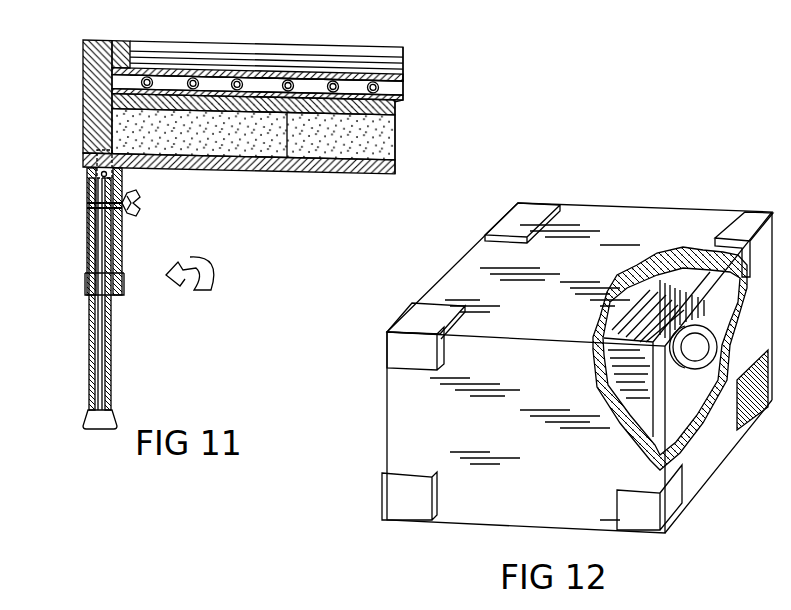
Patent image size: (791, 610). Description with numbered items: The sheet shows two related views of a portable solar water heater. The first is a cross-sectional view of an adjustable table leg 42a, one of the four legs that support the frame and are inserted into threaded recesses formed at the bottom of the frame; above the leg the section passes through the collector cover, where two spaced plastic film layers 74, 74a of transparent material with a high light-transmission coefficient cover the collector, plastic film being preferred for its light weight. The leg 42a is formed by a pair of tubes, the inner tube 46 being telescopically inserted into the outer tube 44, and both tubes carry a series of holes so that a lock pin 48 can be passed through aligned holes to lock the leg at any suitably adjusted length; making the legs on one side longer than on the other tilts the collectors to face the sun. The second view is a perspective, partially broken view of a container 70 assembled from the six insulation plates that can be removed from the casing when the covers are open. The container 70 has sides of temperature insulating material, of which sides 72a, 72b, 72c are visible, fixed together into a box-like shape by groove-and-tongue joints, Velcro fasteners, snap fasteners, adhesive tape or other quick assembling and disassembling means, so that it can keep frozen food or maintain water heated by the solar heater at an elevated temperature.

In FIG. 11, the plastic film layer 74 is at (185, 50).
In FIG. 11, the plastic film layer 74a is at (390, 93).
In FIG. 11, the support post 44 is at (86, 236).
In FIG. 11, the lock pin 48 is at (140, 202).
In FIG. 11, the leg 42a is at (193, 286).
In FIG. 11, the tube 46 is at (111, 379).
In FIG. 12, the container 70 is at (545, 309).
In FIG. 12, the side 72a is at (400, 434).
In FIG. 12, the side 72b is at (602, 220).
In FIG. 12, the side 72c is at (692, 462).